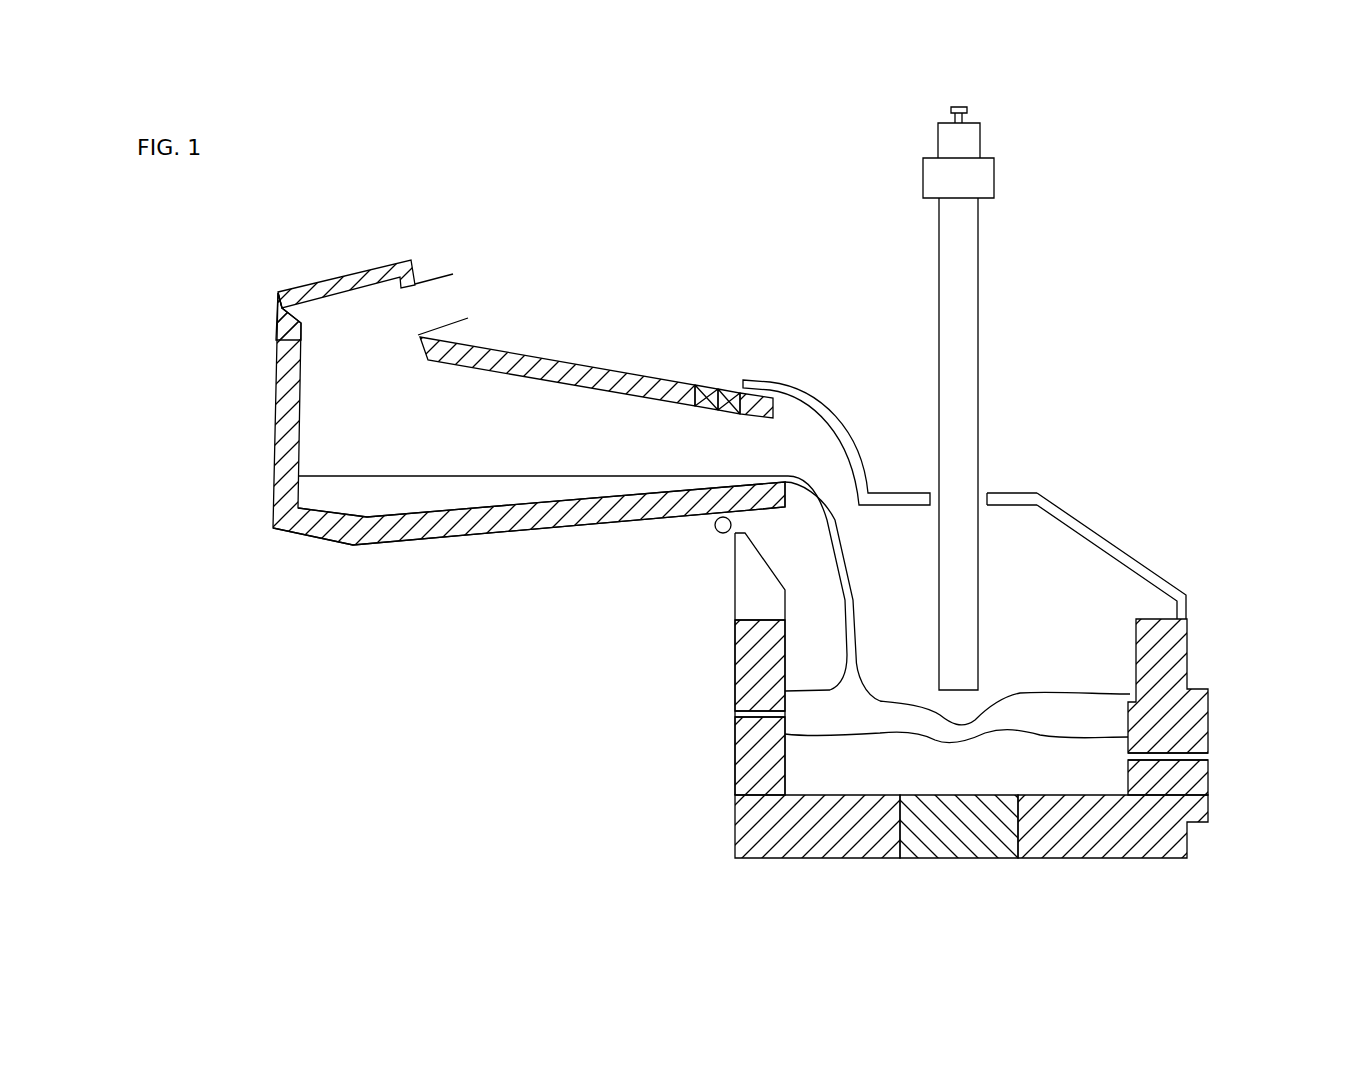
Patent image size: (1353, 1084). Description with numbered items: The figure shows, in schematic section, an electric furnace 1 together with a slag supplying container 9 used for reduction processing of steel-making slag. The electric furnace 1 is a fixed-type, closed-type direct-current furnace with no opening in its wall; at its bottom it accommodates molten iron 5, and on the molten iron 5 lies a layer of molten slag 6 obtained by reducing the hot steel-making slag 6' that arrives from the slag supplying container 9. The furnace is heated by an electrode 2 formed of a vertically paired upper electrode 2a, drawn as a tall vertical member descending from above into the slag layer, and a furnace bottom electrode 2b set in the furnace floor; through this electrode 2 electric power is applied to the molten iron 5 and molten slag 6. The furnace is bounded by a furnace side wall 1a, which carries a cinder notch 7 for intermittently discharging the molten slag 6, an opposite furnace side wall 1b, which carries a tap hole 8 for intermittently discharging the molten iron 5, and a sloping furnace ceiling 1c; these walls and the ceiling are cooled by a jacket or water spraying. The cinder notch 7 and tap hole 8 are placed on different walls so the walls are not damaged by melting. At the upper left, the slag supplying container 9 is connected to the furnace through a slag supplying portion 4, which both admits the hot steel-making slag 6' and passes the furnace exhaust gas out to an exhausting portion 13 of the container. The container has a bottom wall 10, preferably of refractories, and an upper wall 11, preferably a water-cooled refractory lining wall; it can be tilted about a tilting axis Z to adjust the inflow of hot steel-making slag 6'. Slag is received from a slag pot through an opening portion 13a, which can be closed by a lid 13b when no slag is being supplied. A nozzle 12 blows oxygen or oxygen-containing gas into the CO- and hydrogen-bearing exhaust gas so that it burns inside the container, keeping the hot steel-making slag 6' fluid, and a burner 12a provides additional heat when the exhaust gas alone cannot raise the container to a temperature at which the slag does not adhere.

The electric furnace 1 is at (1078, 503).
The furnace side wall 1a is at (748, 722).
The furnace side wall 1b is at (1196, 703).
The furnace ceiling 1c is at (1130, 562).
The electrode 2 is at (998, 358).
The upper electrode 2a is at (965, 250).
The furnace bottom electrode 2b is at (938, 845).
The slag supplying portion 4 is at (808, 443).
The molten iron 5 is at (795, 770).
The molten slag 6 is at (714, 600).
The hot steel-making slag 6' is at (529, 547).
The cinder notch 7 is at (740, 713).
The tap hole 8 is at (1205, 757).
The slag supplying container 9 is at (523, 337).
The bottom wall 10 is at (330, 545).
The upper wall 11 is at (568, 367).
The nozzle 12 is at (722, 389).
The burner 12a is at (702, 385).
The exhausting portion 13 is at (448, 302).
The opening portion 13a is at (365, 262).
The lid 13b is at (317, 282).
The tilting axis Z is at (716, 530).